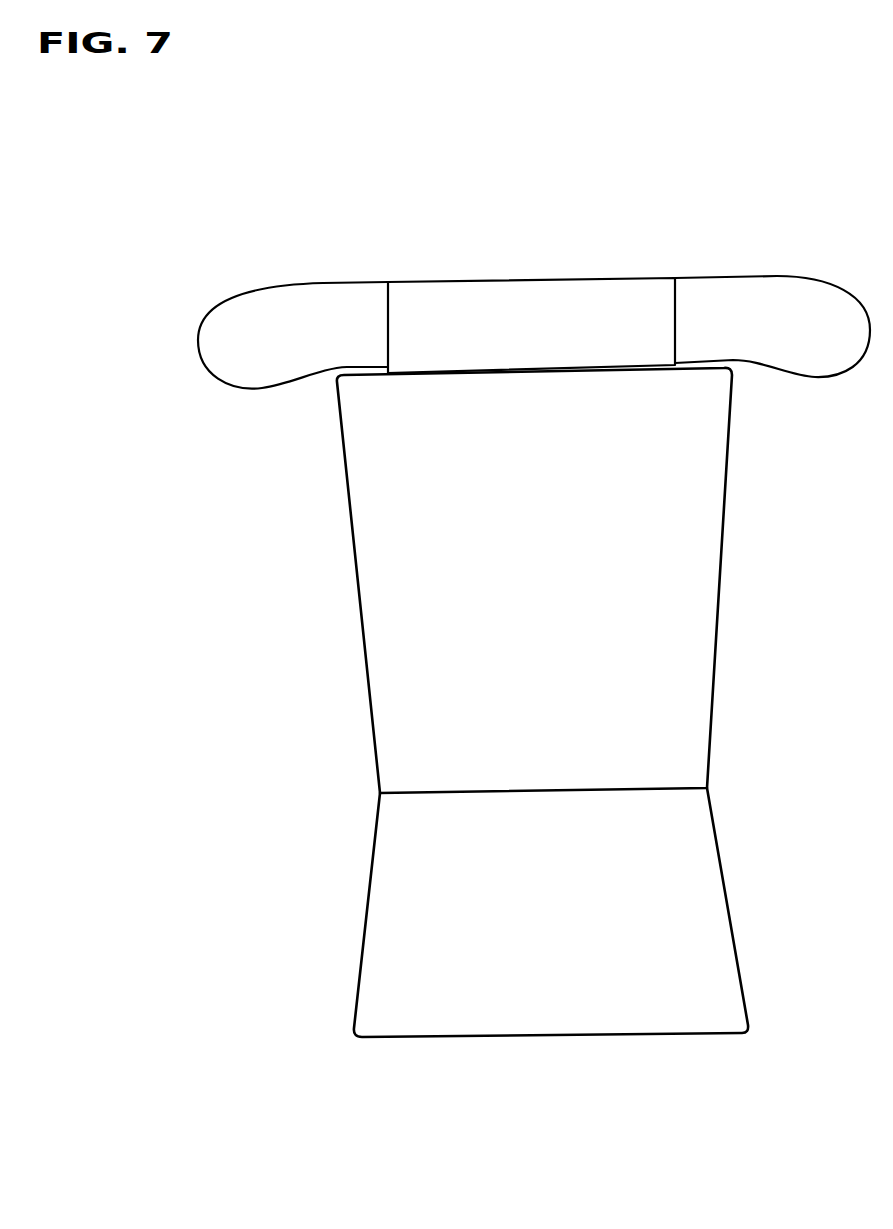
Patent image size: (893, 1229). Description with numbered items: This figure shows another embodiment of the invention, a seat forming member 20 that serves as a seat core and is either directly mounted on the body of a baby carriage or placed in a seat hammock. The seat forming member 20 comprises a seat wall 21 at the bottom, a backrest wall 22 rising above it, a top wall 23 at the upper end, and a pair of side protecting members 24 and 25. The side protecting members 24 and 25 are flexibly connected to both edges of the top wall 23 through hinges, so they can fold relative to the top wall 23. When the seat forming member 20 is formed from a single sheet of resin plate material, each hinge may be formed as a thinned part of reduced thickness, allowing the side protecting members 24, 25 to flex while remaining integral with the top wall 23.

The seat forming member 20 is at (534, 279).
The seat wall 21 is at (705, 898).
The backrest wall 22 is at (698, 588).
The top wall 23 is at (517, 292).
The side protecting member 24 is at (792, 292).
The side protecting member 25 is at (270, 303).